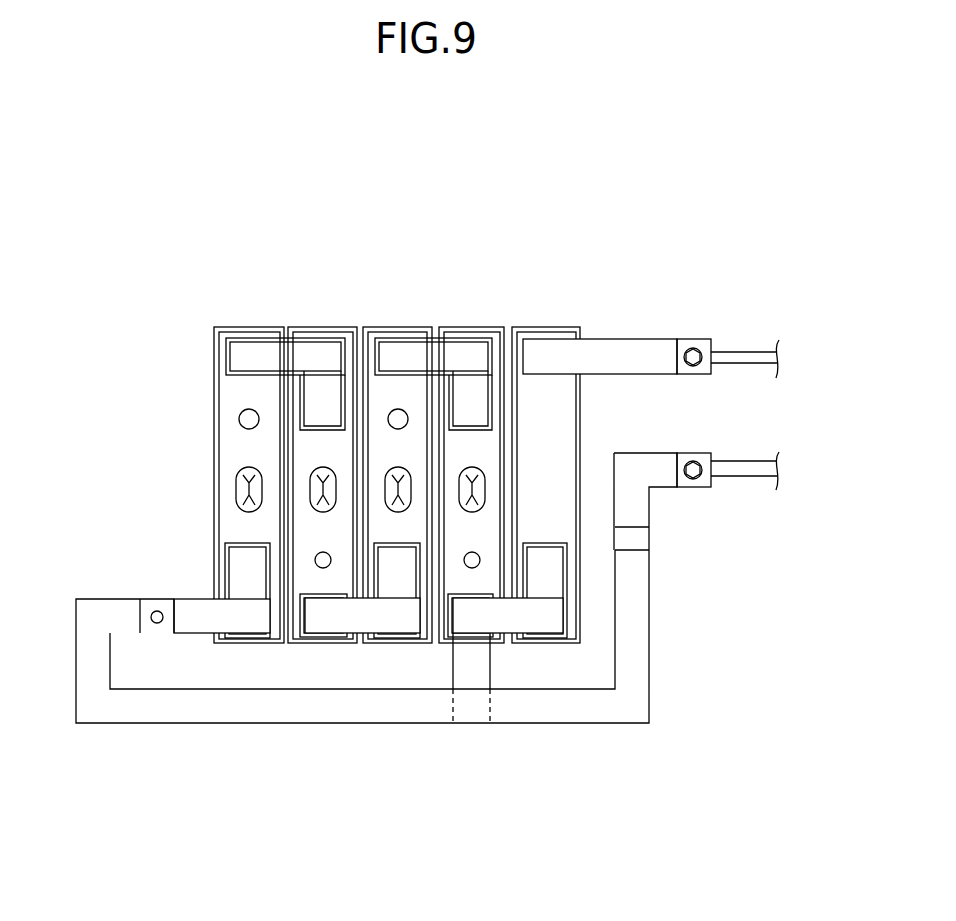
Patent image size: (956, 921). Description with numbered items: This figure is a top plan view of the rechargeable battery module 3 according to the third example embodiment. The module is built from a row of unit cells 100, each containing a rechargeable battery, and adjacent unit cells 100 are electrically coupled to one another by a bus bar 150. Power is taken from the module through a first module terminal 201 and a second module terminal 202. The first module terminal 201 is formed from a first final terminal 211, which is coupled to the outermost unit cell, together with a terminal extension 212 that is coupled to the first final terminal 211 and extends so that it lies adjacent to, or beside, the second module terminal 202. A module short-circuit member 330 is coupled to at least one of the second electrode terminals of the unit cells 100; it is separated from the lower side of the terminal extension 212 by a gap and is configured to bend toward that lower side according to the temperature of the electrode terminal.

The rechargeable battery module 3 is at (425, 229).
The unit cells 100 is at (252, 323).
The bus bar 150 is at (553, 613).
The first module terminal 201 is at (682, 801).
The second module terminal 202 is at (620, 355).
The first final terminal 211 is at (192, 607).
The terminal extension 212 is at (659, 462).
The module short-circuit member 330 is at (479, 665).